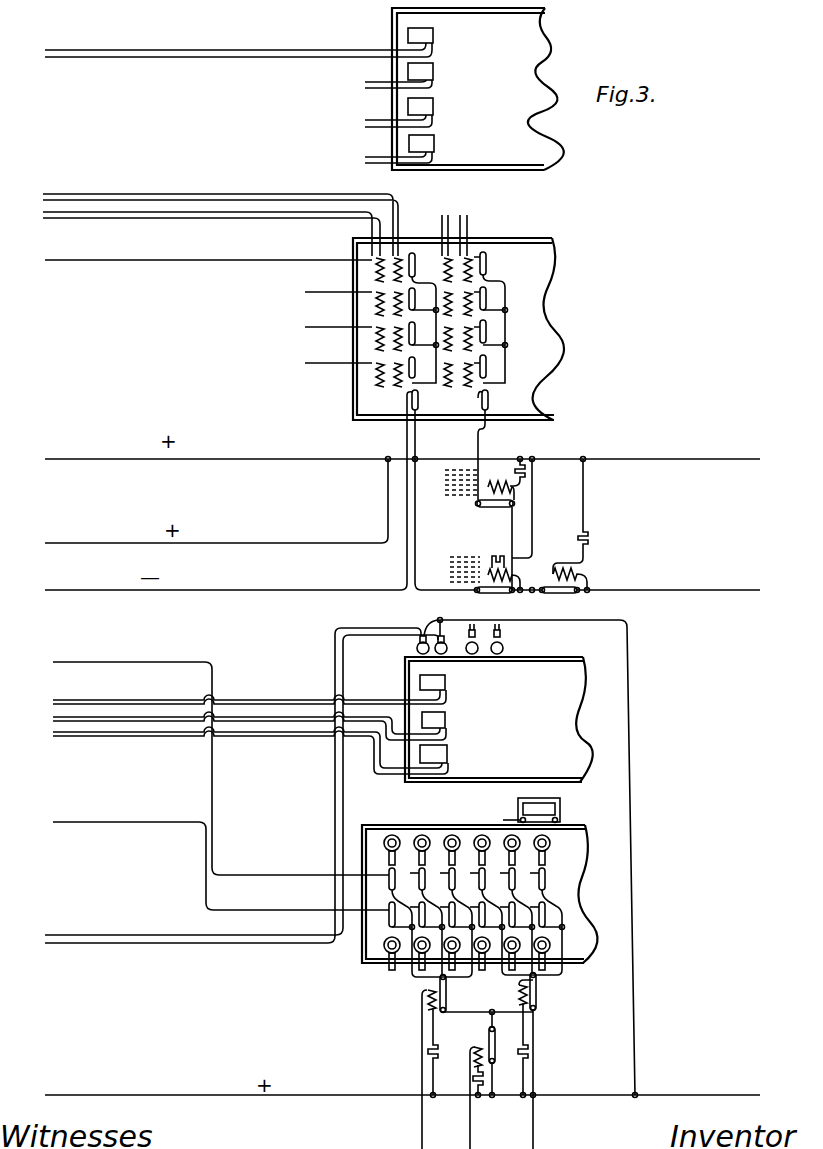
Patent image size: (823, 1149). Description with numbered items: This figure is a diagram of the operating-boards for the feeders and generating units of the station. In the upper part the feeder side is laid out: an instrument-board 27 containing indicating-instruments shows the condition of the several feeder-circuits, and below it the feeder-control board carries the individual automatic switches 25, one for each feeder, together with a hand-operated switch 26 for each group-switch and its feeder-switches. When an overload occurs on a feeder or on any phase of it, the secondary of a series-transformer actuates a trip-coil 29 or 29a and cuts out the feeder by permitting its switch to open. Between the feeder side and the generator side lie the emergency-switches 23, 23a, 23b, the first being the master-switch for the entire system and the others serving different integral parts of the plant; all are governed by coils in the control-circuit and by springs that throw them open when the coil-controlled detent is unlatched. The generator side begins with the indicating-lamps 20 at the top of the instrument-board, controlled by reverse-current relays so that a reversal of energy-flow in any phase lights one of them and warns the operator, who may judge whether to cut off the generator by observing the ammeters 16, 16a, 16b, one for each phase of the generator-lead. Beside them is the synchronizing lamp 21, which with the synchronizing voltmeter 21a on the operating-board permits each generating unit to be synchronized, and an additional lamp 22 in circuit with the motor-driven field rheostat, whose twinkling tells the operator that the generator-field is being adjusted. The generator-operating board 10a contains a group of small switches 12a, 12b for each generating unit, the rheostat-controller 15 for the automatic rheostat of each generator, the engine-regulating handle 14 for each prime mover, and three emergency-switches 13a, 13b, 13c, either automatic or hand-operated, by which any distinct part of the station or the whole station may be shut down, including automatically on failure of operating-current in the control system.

The instrument-board 27 is at (304, 89).
The individual automatic switches 25 is at (418, 254).
The trip-coil 29 is at (368, 273).
The trip-coil 29a is at (372, 281).
The hand-operated switch 26 is at (421, 400).
The emergency-switch 23 is at (558, 594).
The emergency-switch 23a is at (482, 597).
The emergency-switch 23b is at (482, 514).
The indicating-lamps 20 is at (435, 651).
The synchronizing lamp 21 is at (464, 639).
The additional lamp 22 is at (503, 648).
The ammeter 16 is at (447, 683).
The ammeter 16a is at (447, 720).
The ammeter 16b is at (449, 755).
The synchronizing voltmeter 21a is at (517, 803).
The generator-operating board 10a is at (576, 923).
The rheostat-controller 15 is at (388, 856).
The small switches 12b is at (366, 888).
The small switches 12a is at (367, 940).
The engine-regulating handle 14 is at (390, 966).
The emergency-switch 13a is at (497, 1046).
The emergency-switch 13b is at (447, 997).
The emergency-switch 13c is at (538, 997).